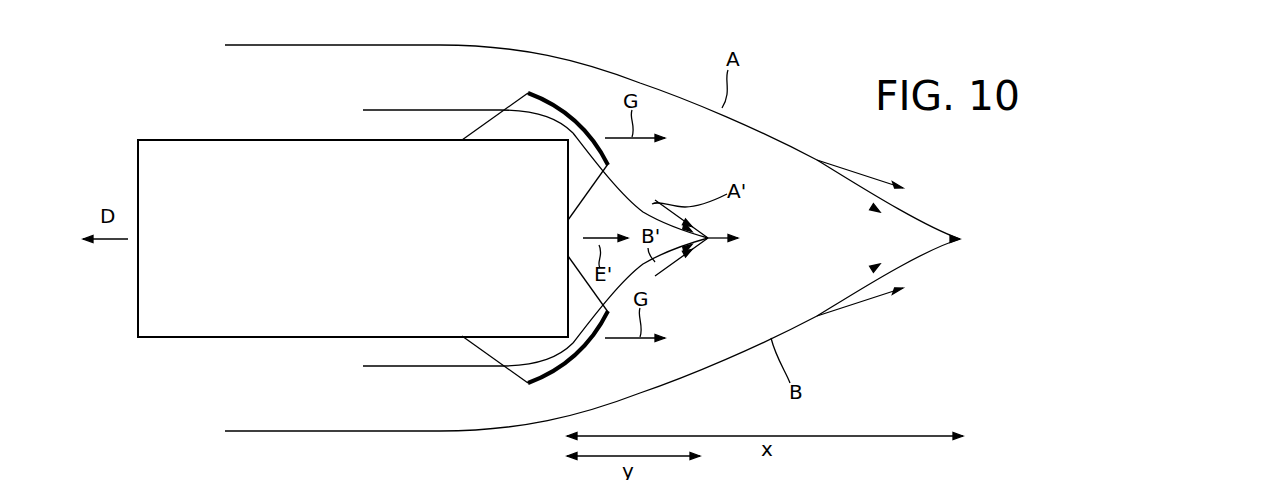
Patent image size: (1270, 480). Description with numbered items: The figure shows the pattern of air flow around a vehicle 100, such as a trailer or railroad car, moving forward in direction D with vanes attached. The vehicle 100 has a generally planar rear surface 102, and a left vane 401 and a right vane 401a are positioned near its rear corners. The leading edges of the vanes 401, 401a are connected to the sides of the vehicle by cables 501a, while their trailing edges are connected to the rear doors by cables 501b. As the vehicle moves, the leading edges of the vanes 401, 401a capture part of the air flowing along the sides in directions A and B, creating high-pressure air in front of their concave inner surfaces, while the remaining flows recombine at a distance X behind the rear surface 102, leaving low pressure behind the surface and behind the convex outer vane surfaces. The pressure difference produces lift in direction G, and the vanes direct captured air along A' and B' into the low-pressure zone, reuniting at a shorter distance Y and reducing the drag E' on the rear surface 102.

The vehicle 100 is at (261, 345).
The rear surface 102 is at (568, 237).
The left vane 401 is at (572, 360).
The right vane 401a is at (573, 117).
The cables 501a is at (508, 110).
The cables 501b is at (607, 172).